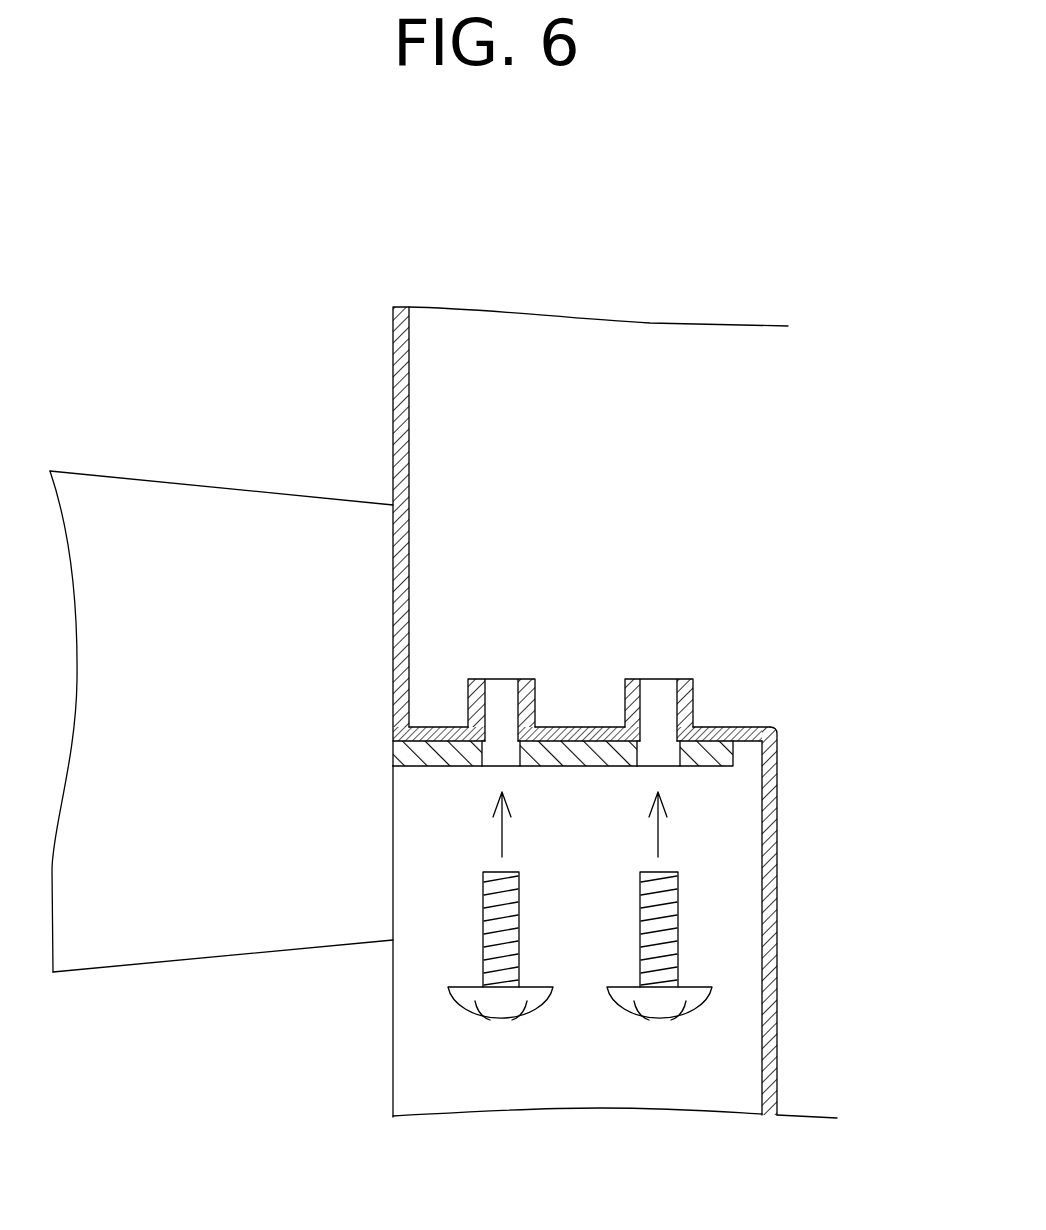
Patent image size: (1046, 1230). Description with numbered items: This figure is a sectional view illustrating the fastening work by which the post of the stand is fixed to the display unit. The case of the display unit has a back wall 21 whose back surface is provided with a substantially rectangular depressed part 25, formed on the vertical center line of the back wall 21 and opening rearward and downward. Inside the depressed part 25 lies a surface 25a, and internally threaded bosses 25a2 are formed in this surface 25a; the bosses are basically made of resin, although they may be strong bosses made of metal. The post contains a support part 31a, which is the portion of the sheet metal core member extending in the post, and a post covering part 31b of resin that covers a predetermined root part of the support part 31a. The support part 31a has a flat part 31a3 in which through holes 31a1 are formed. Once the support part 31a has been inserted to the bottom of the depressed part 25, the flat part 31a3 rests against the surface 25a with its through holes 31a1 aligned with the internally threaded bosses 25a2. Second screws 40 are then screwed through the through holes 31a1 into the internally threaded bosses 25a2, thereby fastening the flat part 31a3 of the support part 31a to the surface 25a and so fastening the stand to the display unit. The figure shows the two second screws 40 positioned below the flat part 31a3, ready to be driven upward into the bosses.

The back wall 21 is at (393, 407).
The depressed part 25 is at (762, 941).
The surface 25a is at (757, 744).
The internally threaded boss 25a2 is at (485, 705).
The support part 31a is at (526, 903).
The through hole 31a1 is at (522, 755).
The flat part 31a3 is at (430, 766).
The post covering part 31b is at (140, 938).
The second screw 40 is at (510, 1022).